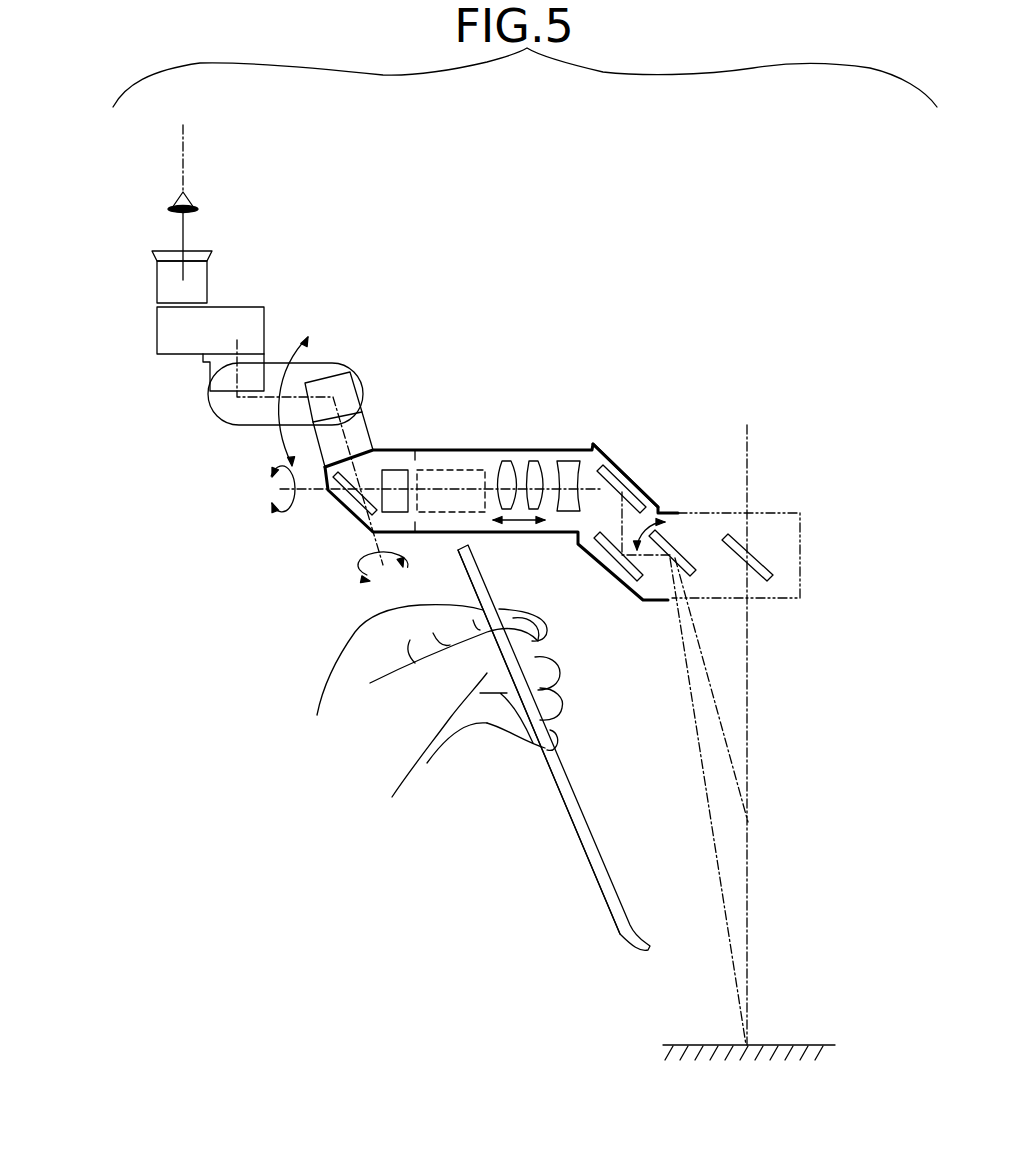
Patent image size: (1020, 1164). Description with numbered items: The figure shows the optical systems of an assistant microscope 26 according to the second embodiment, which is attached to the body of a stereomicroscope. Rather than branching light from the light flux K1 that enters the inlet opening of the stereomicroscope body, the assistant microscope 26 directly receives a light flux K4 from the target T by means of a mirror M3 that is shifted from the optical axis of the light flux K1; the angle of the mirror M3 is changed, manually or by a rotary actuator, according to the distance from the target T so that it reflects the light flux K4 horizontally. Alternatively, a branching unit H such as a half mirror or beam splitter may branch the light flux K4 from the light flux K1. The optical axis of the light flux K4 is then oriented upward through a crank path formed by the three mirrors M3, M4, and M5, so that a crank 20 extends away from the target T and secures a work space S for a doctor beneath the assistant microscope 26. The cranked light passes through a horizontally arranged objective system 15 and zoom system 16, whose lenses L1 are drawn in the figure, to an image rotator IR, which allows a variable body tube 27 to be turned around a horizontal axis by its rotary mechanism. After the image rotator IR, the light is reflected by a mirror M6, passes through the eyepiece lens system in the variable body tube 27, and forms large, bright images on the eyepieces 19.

The eyepieces 19 is at (157, 280).
The variable body tube 27 is at (333, 363).
The assistant microscope 26 is at (574, 318).
The mirror M6 is at (348, 493).
The image rotator IR is at (400, 470).
The zoom system 16 is at (457, 470).
The lens group L1 is at (570, 455).
The objective system 15 is at (563, 520).
The mirror M5 is at (623, 468).
The crank 20 is at (657, 463).
The mirror M3 is at (673, 527).
The mirror M4 is at (618, 583).
The branching unit H is at (757, 558).
The light flux K1 is at (747, 638).
The light flux K4 is at (712, 793).
The target T is at (794, 1045).
The work space S is at (515, 583).